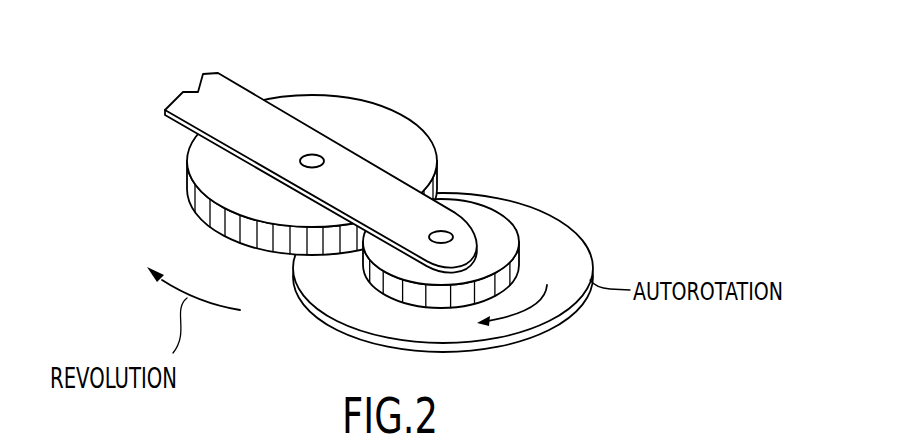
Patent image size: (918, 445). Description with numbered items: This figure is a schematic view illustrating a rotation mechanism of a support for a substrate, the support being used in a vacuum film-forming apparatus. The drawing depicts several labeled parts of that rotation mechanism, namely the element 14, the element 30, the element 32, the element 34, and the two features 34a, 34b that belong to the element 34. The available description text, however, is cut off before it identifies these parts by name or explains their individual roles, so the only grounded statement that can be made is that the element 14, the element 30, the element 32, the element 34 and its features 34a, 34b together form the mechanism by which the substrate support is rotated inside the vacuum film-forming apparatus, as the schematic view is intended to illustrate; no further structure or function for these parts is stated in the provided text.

The rotating table 14 is at (557, 327).
The autorotation gear 30 is at (527, 207).
The revolution gear 32 is at (398, 112).
The arm 34 is at (193, 112).
The first pivot hole 34a is at (311, 155).
The second pivot hole 34b is at (442, 231).